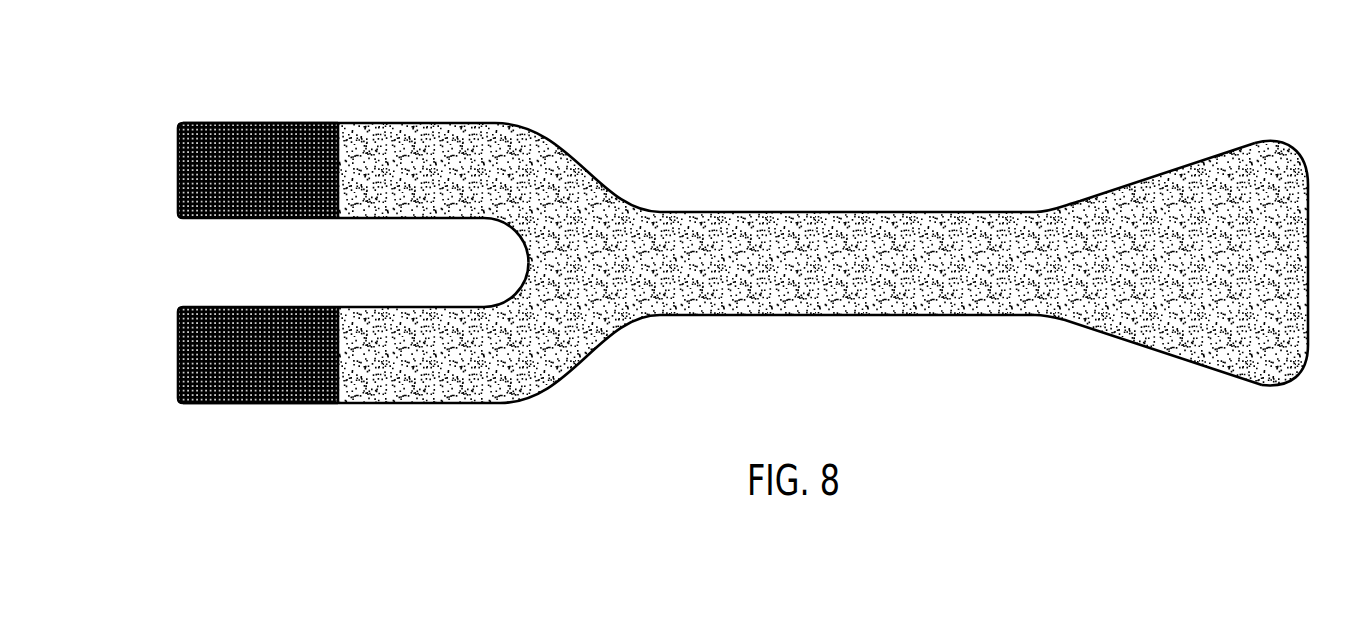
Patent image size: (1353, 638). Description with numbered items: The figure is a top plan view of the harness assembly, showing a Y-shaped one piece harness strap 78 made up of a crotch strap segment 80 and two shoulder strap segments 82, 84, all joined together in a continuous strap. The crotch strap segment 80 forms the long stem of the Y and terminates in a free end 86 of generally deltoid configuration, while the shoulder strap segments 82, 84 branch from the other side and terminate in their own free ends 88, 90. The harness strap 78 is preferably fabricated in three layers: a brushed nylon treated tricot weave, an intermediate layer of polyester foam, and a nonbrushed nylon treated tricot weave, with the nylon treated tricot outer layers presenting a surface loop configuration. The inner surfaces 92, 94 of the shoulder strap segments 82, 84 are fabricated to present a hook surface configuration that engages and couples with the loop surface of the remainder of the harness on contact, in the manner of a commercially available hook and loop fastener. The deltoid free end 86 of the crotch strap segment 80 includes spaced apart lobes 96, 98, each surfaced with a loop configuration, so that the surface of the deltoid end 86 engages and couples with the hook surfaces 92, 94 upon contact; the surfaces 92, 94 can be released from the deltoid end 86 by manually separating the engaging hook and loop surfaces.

The harness strap 78 is at (1008, 334).
The crotch strap segment 80 is at (897, 212).
The shoulder strap segment 82 is at (428, 123).
The shoulder strap segment 84 is at (463, 405).
The free end 86 is at (1160, 167).
The free end 88 is at (178, 173).
The free end 90 is at (178, 362).
The inner surface 92 is at (268, 122).
The inner surface 94 is at (268, 404).
The lobe 96 is at (1287, 142).
The lobe 98 is at (1288, 365).